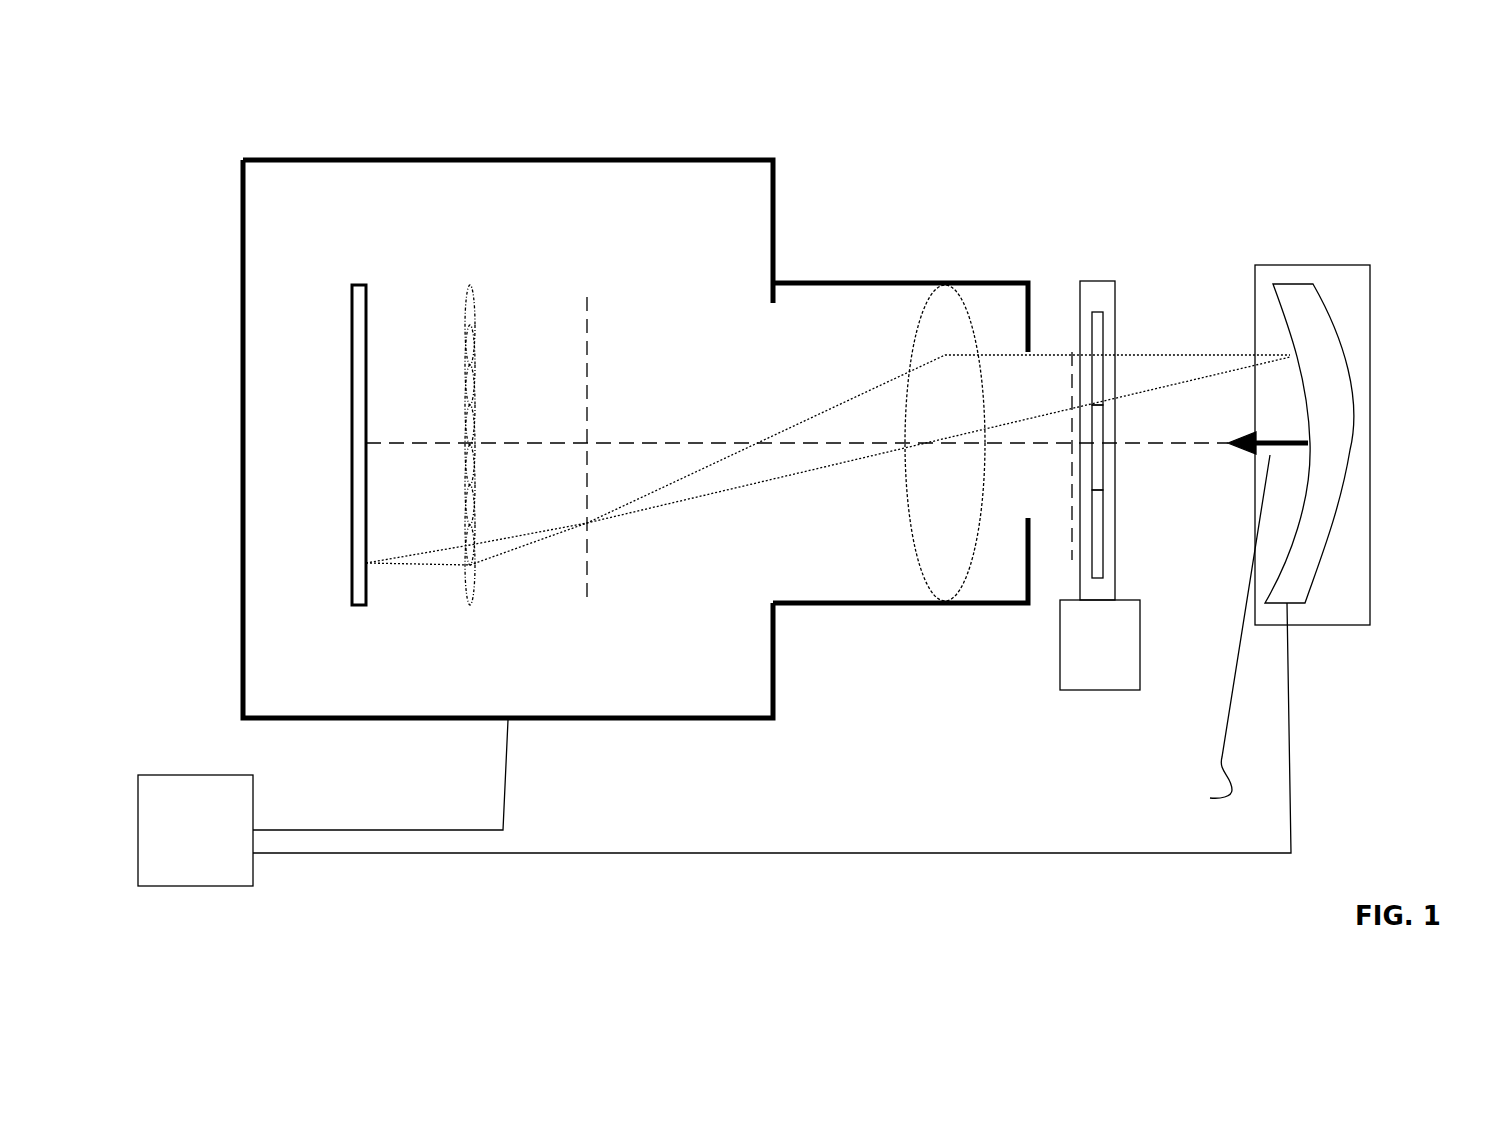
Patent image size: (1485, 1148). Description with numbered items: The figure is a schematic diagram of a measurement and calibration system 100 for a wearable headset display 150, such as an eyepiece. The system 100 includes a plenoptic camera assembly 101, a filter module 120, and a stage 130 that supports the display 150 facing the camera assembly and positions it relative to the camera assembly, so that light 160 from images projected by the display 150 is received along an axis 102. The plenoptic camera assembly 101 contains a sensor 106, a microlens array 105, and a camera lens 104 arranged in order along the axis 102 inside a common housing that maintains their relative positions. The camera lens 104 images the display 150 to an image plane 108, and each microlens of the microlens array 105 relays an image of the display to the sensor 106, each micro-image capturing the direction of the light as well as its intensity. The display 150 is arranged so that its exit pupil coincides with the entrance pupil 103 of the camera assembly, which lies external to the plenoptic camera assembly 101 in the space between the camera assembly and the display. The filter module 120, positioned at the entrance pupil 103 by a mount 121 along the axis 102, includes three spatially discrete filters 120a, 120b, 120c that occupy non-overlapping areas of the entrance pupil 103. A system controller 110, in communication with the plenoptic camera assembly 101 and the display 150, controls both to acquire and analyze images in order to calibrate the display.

The measurement and calibration system 100 is at (178, 128).
The plenoptic camera assembly 101 is at (660, 160).
The axis 102 is at (1028, 443).
The entrance pupil 103 is at (1072, 348).
The camera lens 104 is at (907, 372).
The microlens array 105 is at (470, 287).
The sensor 106 is at (358, 285).
The image plane 108 is at (587, 405).
The system controller 110 is at (714, 744).
The filter module 120 is at (1164, 386).
The filter 120a is at (1103, 330).
The filter 120b is at (1103, 478).
The filter 120c is at (1103, 548).
The mount 121 is at (1113, 690).
The stage 130 is at (1370, 357).
The wearable headset display 150 is at (1313, 284).
The light 160 is at (1215, 636).